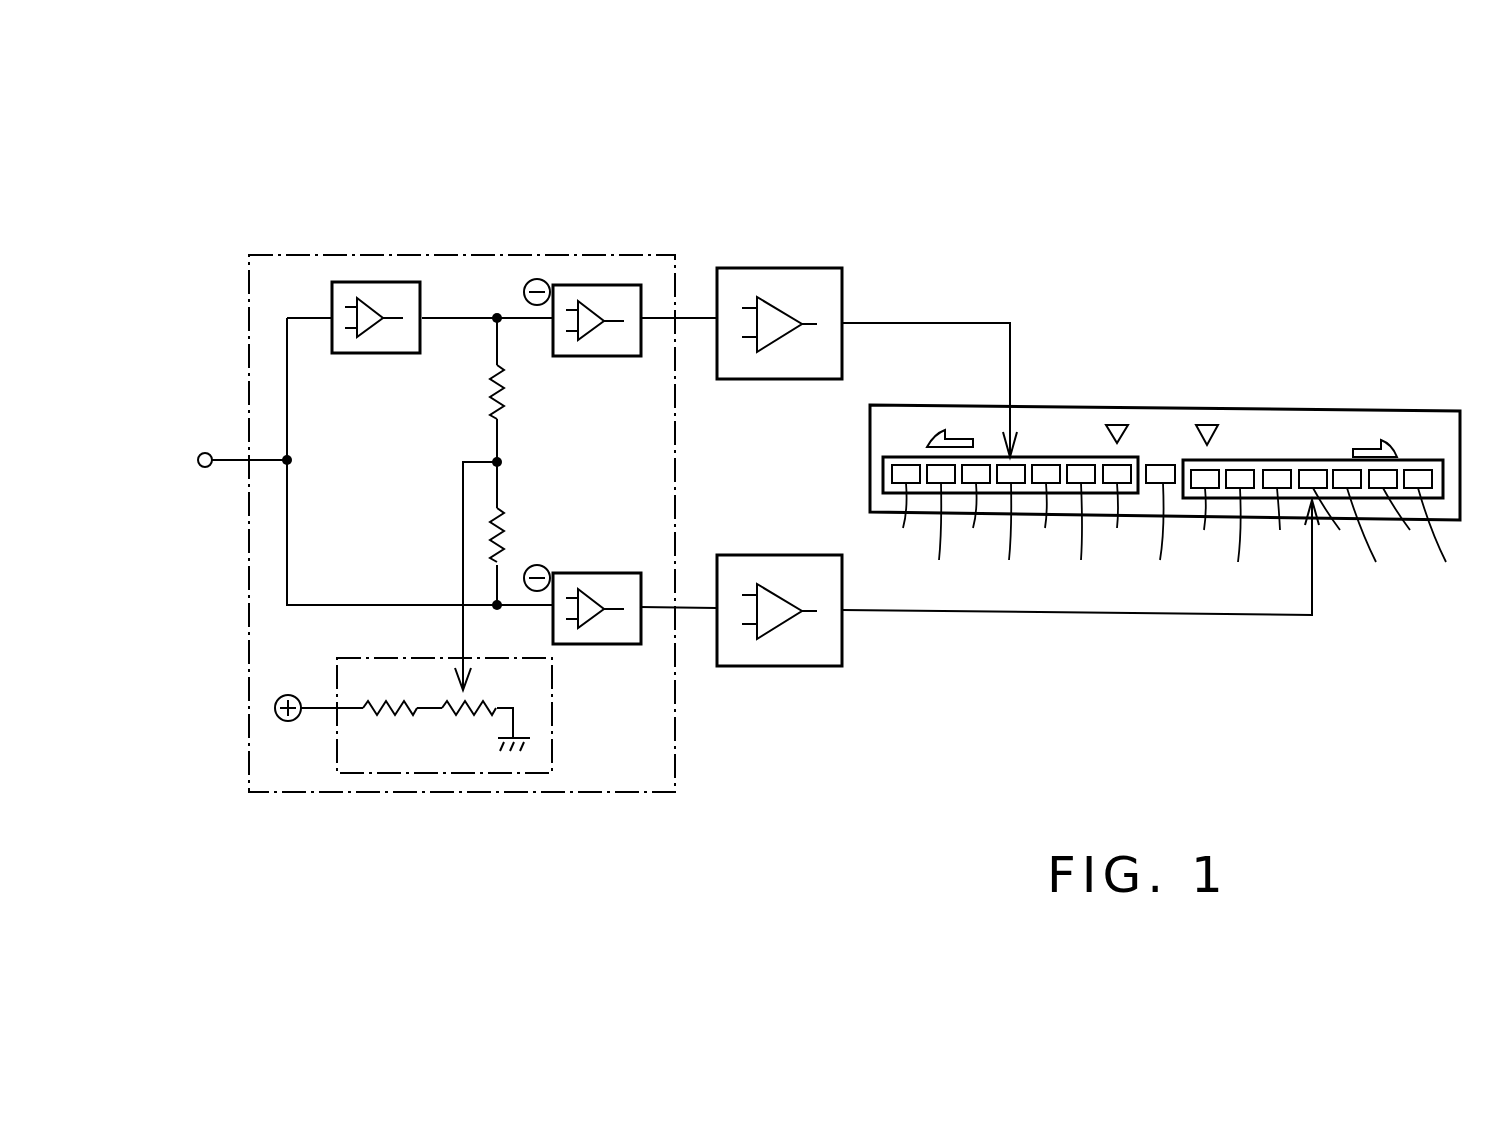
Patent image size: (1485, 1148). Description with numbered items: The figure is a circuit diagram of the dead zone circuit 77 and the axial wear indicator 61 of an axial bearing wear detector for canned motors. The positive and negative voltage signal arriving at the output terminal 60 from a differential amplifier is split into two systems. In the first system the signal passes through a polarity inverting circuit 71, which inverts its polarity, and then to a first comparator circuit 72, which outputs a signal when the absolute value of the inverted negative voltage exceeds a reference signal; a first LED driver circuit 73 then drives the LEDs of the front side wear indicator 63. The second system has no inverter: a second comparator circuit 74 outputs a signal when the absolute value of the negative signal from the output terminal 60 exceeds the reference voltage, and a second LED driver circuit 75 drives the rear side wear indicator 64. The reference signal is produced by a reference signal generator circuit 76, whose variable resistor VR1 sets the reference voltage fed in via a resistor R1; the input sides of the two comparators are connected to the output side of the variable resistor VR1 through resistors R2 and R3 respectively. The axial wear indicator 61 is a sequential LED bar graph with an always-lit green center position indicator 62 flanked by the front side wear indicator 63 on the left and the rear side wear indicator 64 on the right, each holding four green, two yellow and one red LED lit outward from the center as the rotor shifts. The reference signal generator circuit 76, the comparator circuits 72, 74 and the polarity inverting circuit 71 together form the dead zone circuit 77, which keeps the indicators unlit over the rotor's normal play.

The output terminal 60 is at (200, 452).
The axial wear indicator 61 is at (1417, 413).
The center position indicator 62 is at (1165, 465).
The front side wear indicator 63 is at (1069, 457).
The rear side wear indicator 64 is at (1285, 460).
The polarity inverting circuit 71 is at (385, 282).
The first comparator circuit 72 is at (605, 285).
The first LED driver circuit 73 is at (808, 268).
The second comparator circuit 74 is at (623, 644).
The second LED driver circuit 75 is at (805, 666).
The reference signal generator circuit 76 is at (461, 715).
The dead zone circuit 77 is at (248, 585).
The resistor R1 is at (388, 717).
The resistor R2 is at (506, 400).
The resistor R3 is at (506, 522).
The variable resistor VR1 is at (466, 717).